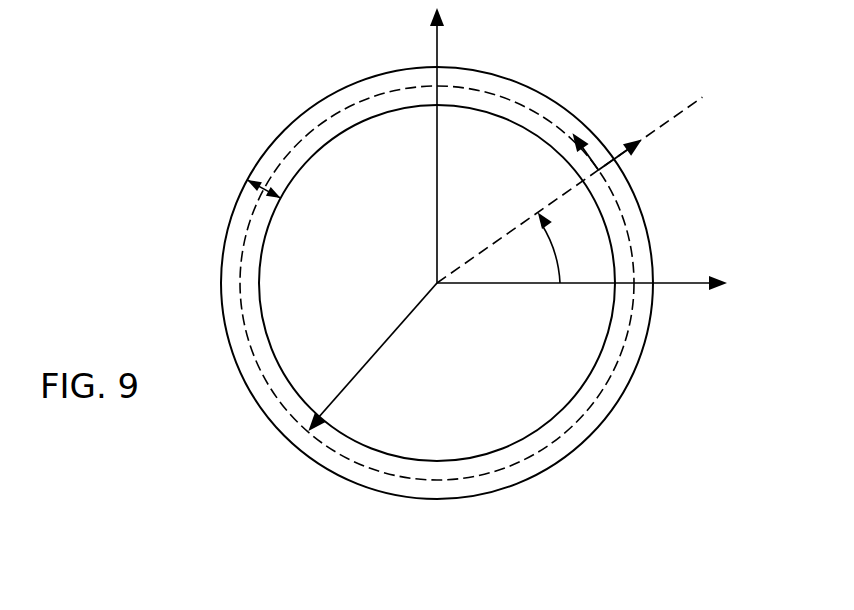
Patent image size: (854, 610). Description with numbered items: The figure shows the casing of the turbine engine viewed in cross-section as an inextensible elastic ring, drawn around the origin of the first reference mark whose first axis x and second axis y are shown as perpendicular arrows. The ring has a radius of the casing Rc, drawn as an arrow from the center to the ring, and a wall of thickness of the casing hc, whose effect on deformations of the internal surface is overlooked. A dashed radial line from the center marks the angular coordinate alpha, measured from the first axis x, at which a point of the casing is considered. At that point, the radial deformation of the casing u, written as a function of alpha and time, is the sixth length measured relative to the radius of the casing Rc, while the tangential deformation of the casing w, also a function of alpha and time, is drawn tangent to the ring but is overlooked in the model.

The thickness of the casing hc is at (265, 180).
The radius of the casing Rc is at (372, 357).
The angular coordinate alpha is at (557, 248).
The radial deformation of the casing u is at (642, 159).
The tangential deformation of the casing w is at (572, 136).
The first axis of the first reference mark x is at (582, 294).
The second axis of the first reference mark y is at (429, 145).